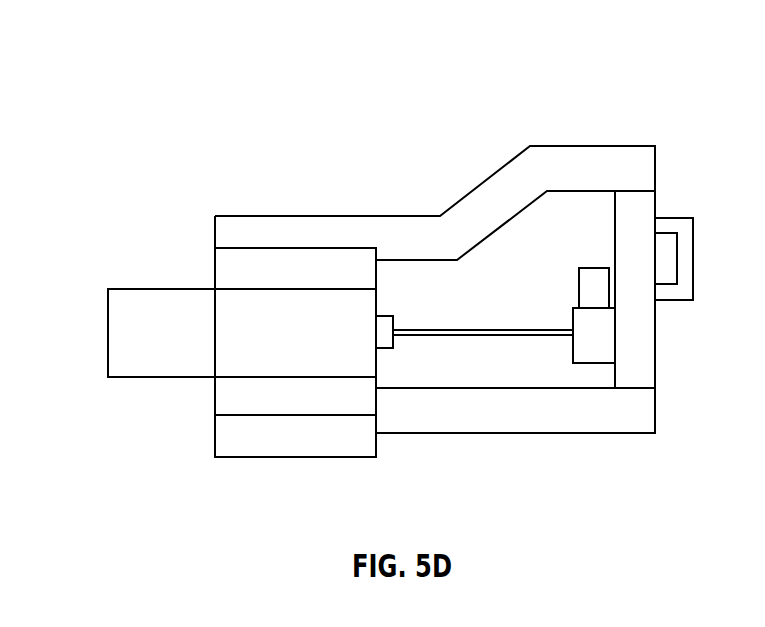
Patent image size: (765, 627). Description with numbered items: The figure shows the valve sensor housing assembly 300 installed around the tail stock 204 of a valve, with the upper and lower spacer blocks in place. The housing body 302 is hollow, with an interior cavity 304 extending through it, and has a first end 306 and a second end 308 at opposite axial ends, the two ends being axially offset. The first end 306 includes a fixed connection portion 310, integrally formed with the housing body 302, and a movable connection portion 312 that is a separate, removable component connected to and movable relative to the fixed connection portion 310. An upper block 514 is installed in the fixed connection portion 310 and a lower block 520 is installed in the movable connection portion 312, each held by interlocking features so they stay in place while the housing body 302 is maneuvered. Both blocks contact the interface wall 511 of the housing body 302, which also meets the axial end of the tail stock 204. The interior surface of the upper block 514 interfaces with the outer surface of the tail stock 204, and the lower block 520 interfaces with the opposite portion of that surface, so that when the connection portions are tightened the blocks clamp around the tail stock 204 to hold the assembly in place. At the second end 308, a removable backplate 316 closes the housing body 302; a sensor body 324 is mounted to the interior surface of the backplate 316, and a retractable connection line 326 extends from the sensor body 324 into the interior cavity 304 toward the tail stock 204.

The valve sensor housing assembly 300 is at (650, 50).
The second end 308 is at (664, 101).
The housing body 302 is at (592, 145).
The interior cavity 304 is at (513, 245).
The removable backplate 316 is at (657, 207).
The fixed connection portion 310 is at (250, 225).
The upper block 514 is at (228, 268).
The lower block 520 is at (228, 398).
The movable connection portion 312 is at (230, 448).
The interface wall 511 is at (375, 270).
The tail stock 204 is at (108, 332).
The retractable connection line 326 is at (488, 335).
The sensor body 324 is at (595, 352).
The first end 306 is at (271, 480).